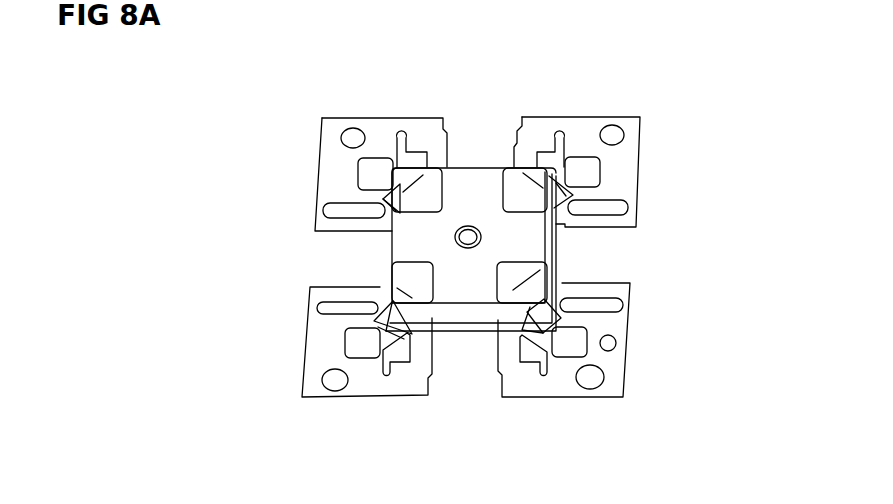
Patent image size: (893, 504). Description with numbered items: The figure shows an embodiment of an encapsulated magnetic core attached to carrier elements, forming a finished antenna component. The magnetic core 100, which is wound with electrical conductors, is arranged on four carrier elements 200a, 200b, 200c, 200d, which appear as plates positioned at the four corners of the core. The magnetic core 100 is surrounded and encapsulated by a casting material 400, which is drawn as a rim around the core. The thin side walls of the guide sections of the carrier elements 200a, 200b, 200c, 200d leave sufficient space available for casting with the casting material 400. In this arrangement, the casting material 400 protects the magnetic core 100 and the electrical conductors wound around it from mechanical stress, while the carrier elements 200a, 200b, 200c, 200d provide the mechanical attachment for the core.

The magnetic core 100 is at (478, 152).
The carrier element 200a is at (618, 365).
The carrier element 200b is at (627, 143).
The carrier element 200c is at (332, 165).
The carrier element 200d is at (308, 343).
The casting material 400 is at (521, 276).